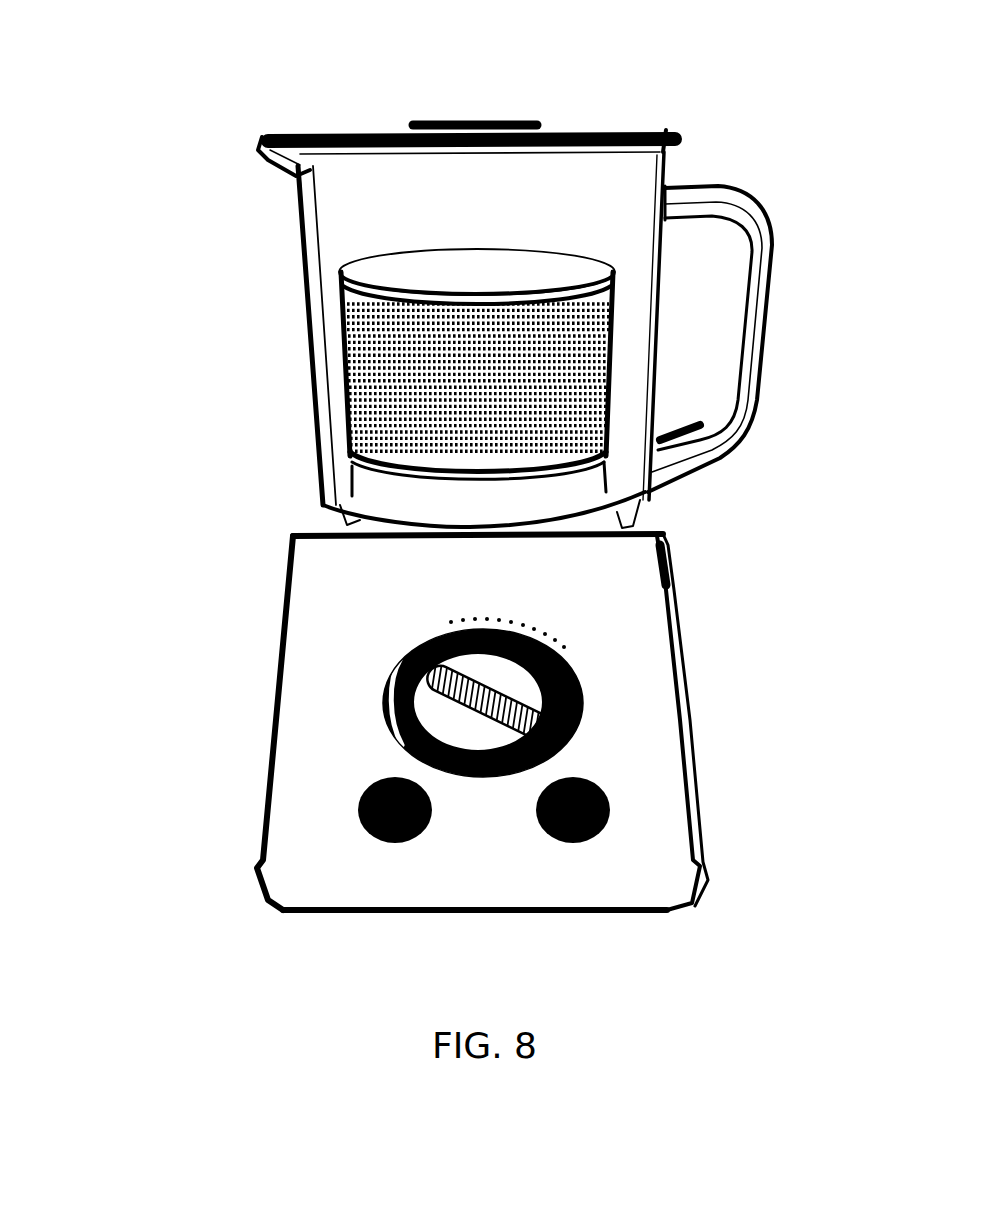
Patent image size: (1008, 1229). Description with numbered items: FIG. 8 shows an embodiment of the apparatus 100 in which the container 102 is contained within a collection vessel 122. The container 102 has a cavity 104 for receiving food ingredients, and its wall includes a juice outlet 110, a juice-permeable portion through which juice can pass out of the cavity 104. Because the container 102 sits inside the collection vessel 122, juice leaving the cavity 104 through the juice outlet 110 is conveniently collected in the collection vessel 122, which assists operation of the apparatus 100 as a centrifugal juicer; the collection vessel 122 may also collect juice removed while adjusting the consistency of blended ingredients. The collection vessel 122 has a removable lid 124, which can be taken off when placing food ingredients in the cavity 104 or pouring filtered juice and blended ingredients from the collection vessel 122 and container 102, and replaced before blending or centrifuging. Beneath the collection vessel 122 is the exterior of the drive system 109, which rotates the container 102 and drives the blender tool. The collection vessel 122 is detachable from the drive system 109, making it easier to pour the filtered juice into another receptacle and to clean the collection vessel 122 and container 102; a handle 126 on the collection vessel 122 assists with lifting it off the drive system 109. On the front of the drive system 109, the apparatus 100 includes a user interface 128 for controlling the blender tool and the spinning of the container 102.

The apparatus 100 is at (139, 126).
The container 102 is at (372, 400).
The cavity 104 is at (527, 290).
The drive system 109 is at (315, 680).
The juice outlet 110 is at (555, 408).
The collection vessel 122 is at (343, 207).
The removable lid 124 is at (488, 122).
The handle 126 is at (752, 268).
The user interface 128 is at (366, 790).